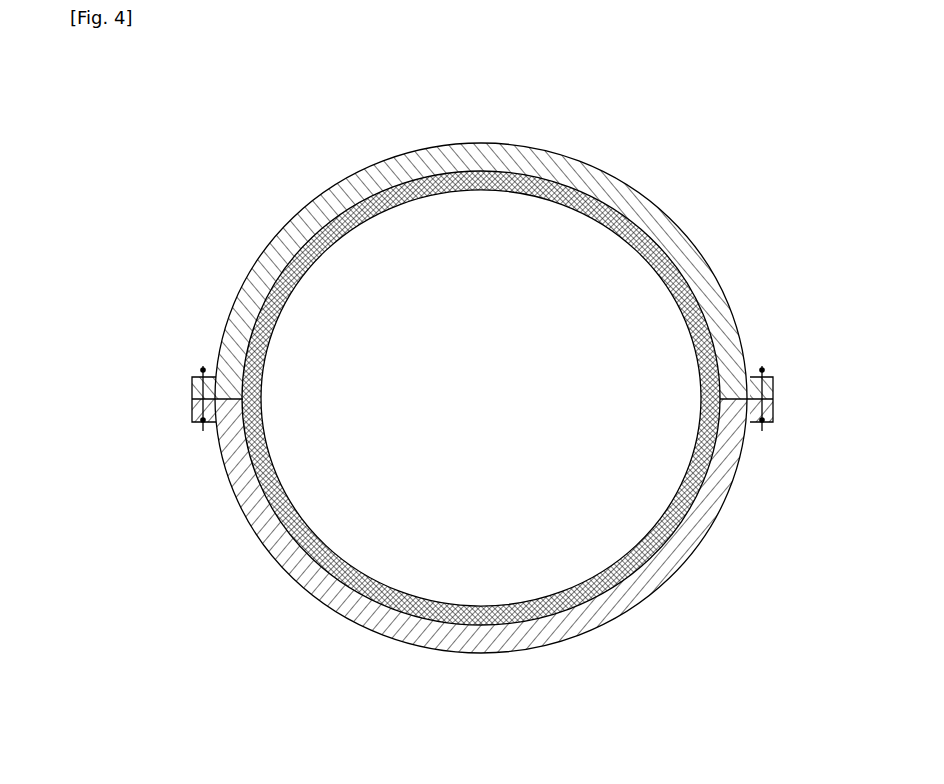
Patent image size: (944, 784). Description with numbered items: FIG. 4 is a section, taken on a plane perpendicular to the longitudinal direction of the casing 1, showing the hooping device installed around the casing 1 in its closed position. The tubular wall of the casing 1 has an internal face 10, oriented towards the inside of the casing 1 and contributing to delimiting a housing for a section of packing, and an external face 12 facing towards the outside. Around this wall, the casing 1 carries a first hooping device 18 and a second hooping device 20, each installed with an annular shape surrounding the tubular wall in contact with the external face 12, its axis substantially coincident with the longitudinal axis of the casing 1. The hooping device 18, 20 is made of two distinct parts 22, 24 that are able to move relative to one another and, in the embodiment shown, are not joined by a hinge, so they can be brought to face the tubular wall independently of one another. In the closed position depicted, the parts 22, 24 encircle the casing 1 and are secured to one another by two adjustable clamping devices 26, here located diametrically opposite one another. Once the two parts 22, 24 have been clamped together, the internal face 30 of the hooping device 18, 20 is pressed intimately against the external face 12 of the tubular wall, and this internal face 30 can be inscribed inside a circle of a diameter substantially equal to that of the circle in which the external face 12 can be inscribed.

The casing 1 is at (706, 318).
The internal face 10 is at (466, 194).
The external face 12 is at (398, 176).
The first hooping device 18 is at (211, 252).
The second hooping device 20 is at (268, 246).
The part 22 is at (302, 210).
The part 24 is at (270, 556).
The clamping device 26 is at (192, 412).
The internal face 30 is at (606, 208).